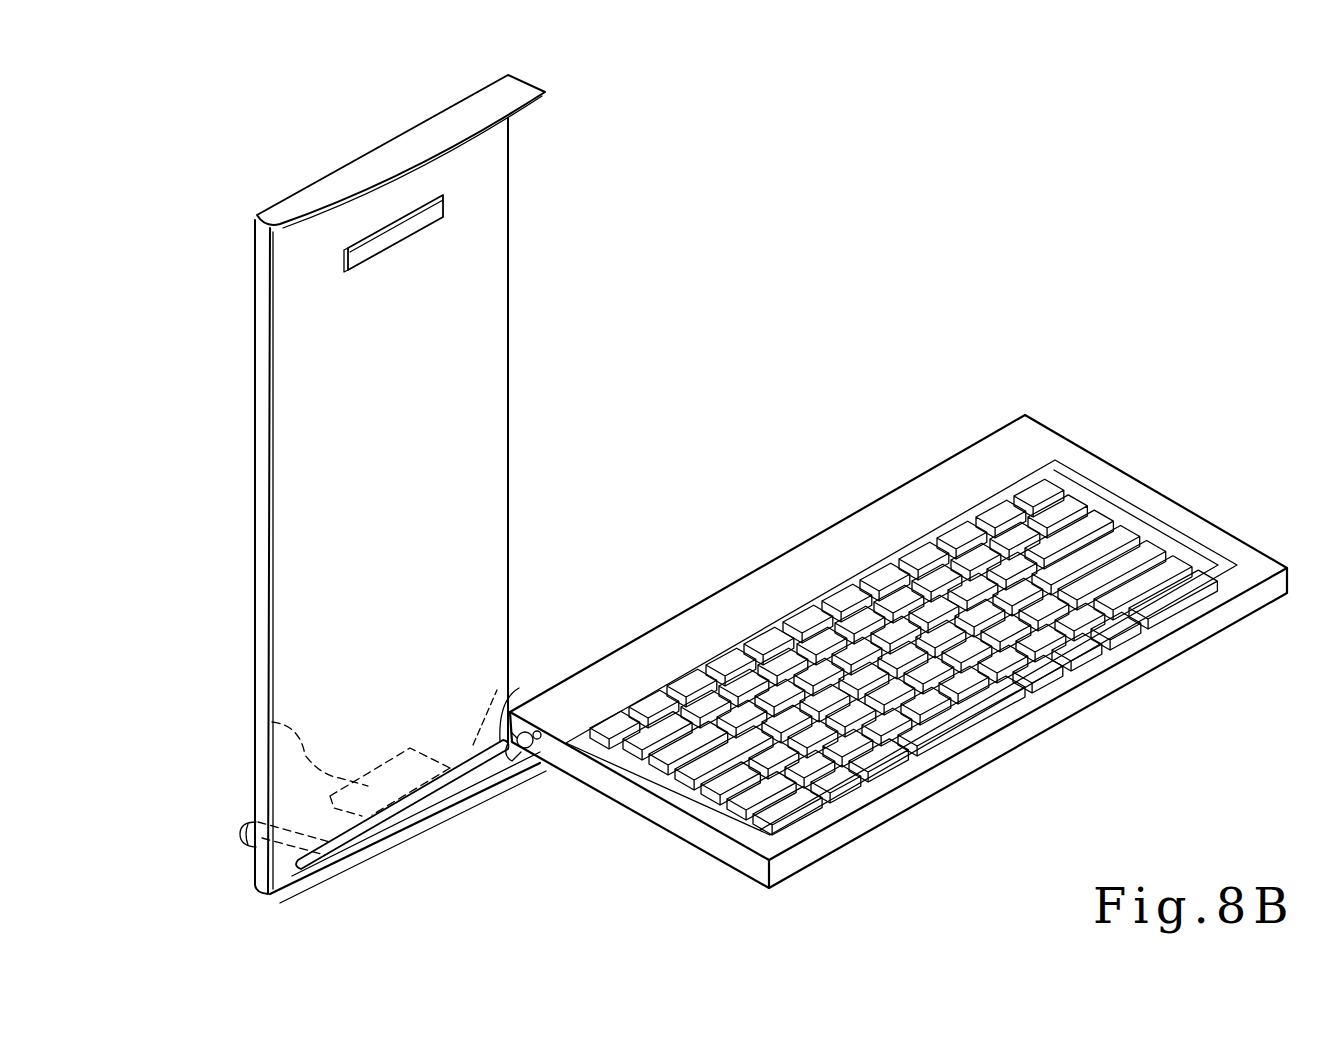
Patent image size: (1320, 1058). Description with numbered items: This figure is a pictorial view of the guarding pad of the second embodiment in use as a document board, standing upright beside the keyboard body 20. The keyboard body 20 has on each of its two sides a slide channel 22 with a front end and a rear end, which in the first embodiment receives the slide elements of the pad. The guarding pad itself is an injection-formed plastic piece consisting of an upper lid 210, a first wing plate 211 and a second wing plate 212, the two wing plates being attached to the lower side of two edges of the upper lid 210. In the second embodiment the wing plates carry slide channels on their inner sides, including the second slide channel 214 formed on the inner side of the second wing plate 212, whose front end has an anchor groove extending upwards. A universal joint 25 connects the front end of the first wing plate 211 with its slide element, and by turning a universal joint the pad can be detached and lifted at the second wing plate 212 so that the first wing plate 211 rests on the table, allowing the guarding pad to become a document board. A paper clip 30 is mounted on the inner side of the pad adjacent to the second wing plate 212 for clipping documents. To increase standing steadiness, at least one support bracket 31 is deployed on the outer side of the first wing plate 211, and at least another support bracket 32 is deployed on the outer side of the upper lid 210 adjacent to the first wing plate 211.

The keyboard body 20 is at (898, 651).
The slide channel 22 is at (663, 806).
The universal joint 25 is at (527, 758).
The paper clip 30 is at (428, 222).
The support bracket 31 is at (240, 834).
The support bracket 32 is at (268, 722).
The upper lid 210 is at (497, 400).
The first wing plate 211 is at (458, 793).
The second wing plate 212 is at (413, 135).
The second slide channel 214 is at (405, 833).